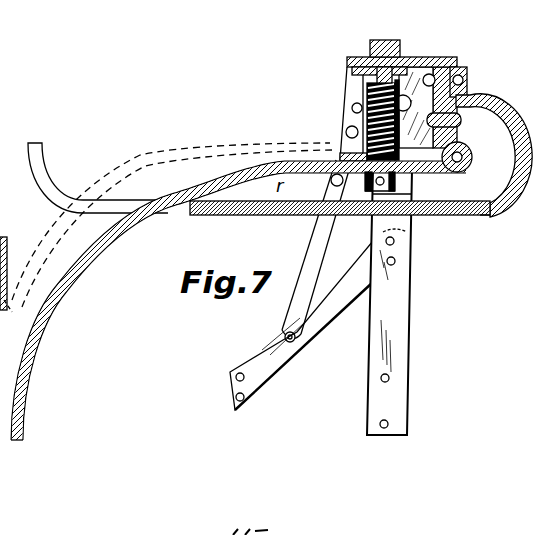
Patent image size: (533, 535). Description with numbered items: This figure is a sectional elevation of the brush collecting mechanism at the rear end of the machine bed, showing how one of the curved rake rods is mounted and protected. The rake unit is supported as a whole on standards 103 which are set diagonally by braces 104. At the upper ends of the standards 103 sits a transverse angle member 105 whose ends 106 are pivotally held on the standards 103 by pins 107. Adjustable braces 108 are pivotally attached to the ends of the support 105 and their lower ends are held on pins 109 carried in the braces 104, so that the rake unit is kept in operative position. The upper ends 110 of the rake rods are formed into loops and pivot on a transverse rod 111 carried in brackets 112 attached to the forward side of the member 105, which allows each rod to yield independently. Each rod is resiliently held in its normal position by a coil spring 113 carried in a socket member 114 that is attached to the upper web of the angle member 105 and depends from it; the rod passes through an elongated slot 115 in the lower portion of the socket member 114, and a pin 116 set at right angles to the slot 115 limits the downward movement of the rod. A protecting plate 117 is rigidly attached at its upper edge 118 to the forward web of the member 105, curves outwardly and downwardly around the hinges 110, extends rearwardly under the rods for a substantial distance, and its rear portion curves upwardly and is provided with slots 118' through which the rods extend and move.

The standard 103 is at (393, 291).
The brace 104 is at (278, 364).
The transverse angle member 105 is at (443, 47).
The end 106 is at (463, 78).
The pin 107 is at (462, 88).
The adjustable brace 108 is at (312, 228).
The pin 109 is at (284, 338).
The upper end 110 is at (462, 127).
The transverse rod 111 is at (471, 165).
The bracket 112 is at (473, 103).
The coil spring 113 is at (356, 110).
The socket member 114 is at (363, 94).
The elongated slot 115 is at (398, 179).
The pin 116 is at (406, 191).
The protecting plate 117 is at (436, 225).
The upper edge 118 is at (431, 65).
The slot 118' is at (172, 225).